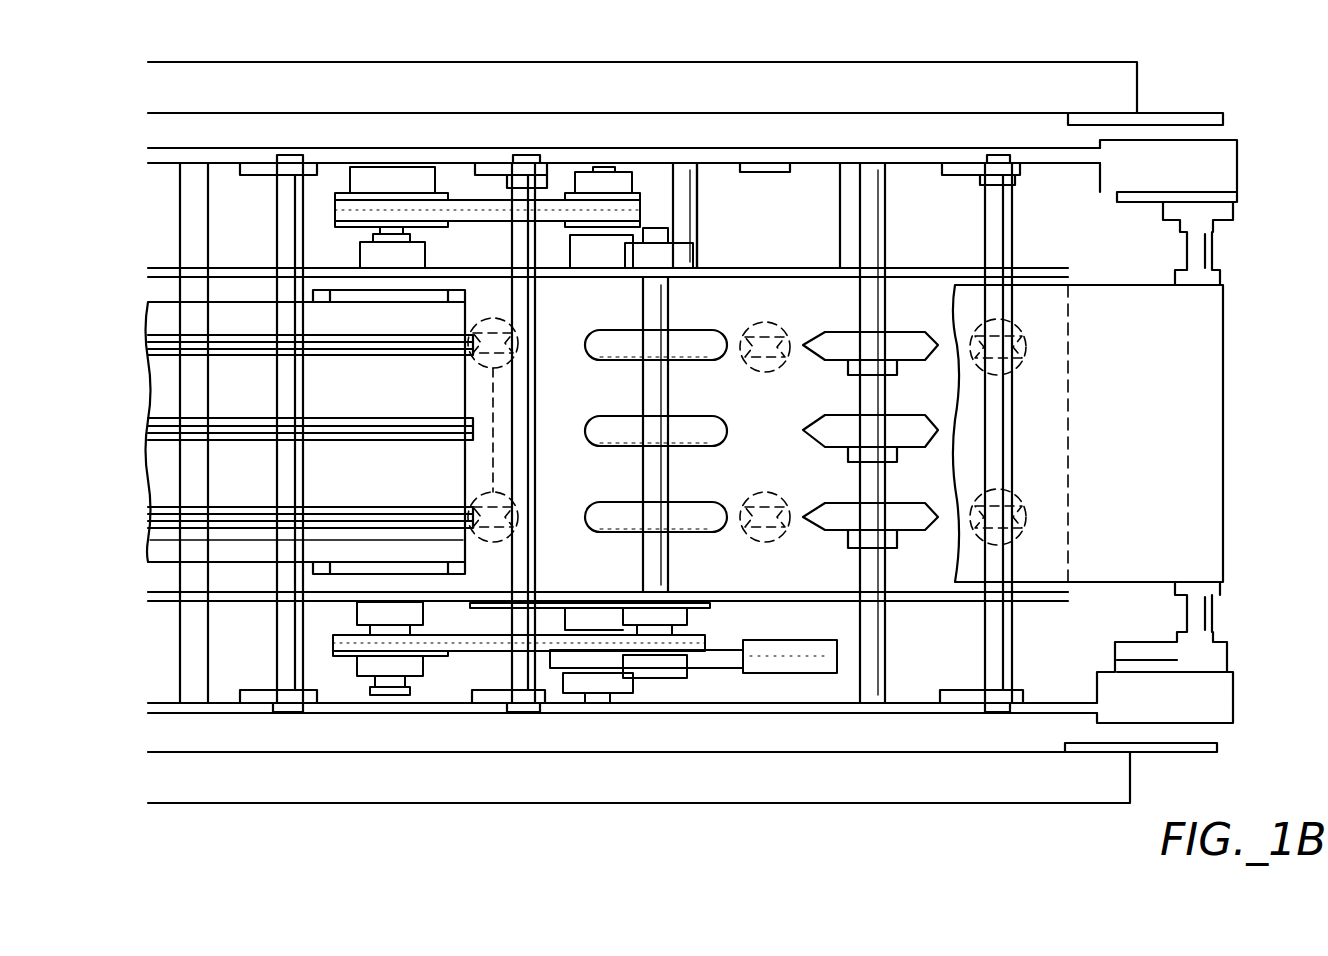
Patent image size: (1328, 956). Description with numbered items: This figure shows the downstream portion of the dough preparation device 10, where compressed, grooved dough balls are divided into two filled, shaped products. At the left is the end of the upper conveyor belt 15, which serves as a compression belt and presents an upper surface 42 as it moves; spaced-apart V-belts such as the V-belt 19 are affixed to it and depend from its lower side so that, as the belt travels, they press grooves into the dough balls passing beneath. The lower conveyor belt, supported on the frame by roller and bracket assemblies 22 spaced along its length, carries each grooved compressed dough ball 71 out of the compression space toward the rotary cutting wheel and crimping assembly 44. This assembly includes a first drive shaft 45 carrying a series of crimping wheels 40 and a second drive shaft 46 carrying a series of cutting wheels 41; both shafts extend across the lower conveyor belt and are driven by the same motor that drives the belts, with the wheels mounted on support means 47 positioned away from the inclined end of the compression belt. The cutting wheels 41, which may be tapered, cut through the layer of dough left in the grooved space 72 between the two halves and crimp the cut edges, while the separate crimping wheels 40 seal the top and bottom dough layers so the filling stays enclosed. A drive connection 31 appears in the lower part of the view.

The dough preparation device 10 is at (317, 780).
The upper conveyor belt 15 is at (233, 575).
The V-belt 19 is at (208, 350).
The roller and bracket assembly 22 is at (291, 190).
The drive gear train 31 is at (437, 565).
The crimping wheels 40 is at (585, 515).
The cutting wheels 41 is at (835, 520).
The upper surface 42 is at (302, 489).
The rotary cutting wheel and crimping assembly 44 is at (760, 272).
The drive shaft 45 is at (650, 568).
The drive shaft 46 is at (873, 695).
The support means 47 is at (908, 597).
The grooved compressed dough ball 71 is at (458, 468).
The grooved space 72 is at (1010, 320).